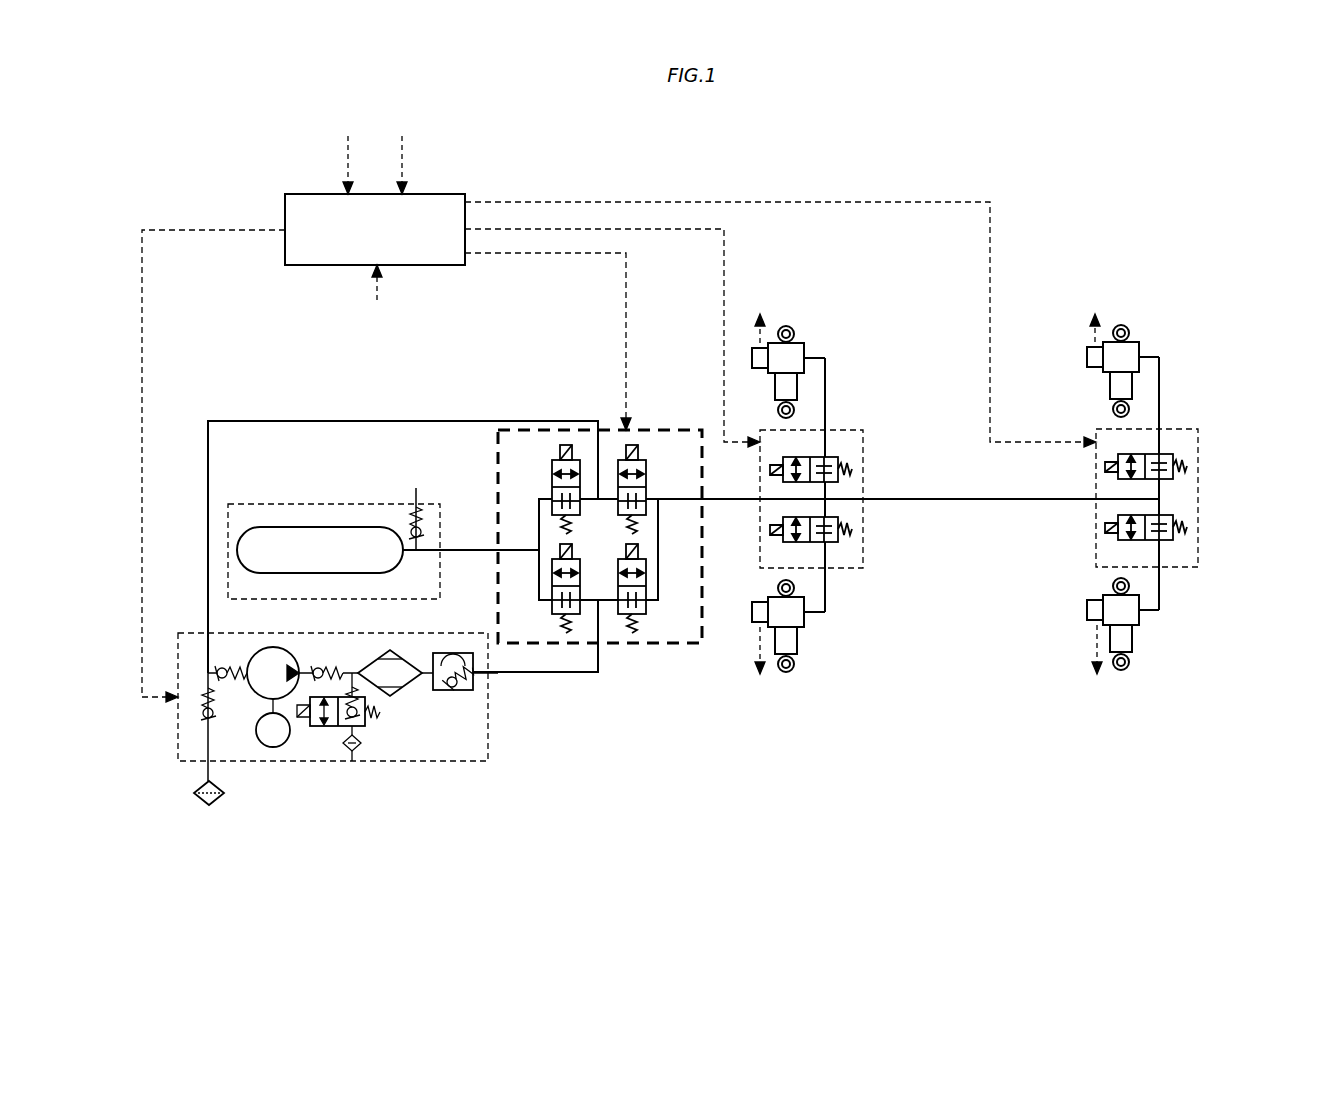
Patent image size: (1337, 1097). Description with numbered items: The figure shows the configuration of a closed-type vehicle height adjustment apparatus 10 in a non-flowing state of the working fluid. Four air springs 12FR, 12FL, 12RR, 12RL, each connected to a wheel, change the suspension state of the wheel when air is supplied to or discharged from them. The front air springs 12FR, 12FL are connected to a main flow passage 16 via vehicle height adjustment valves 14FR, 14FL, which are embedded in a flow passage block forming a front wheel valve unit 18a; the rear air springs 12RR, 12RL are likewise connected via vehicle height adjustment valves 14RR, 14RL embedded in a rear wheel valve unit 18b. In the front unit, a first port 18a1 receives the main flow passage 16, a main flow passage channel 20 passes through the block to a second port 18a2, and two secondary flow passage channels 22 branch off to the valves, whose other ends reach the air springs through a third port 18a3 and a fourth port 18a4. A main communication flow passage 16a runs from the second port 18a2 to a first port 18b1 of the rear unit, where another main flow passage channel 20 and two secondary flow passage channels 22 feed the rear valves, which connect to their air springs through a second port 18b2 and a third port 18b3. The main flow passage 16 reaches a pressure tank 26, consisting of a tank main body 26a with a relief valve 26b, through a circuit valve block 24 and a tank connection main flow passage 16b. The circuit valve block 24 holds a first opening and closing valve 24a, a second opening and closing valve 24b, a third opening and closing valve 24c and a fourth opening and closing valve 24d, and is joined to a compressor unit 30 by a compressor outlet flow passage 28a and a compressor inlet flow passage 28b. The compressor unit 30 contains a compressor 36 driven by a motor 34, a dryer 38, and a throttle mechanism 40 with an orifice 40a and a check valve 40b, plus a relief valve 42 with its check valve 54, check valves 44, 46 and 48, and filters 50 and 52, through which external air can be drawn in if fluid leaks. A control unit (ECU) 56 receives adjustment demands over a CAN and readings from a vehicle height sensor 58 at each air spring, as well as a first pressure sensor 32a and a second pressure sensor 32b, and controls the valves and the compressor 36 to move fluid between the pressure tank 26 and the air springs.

The vehicle height adjustment apparatus 10 is at (712, 821).
The air spring 12FR is at (795, 343).
The air spring 12FL is at (797, 640).
The air spring 12RR is at (1130, 342).
The air spring 12RL is at (1134, 638).
The vehicle height adjustment valve 14FR is at (835, 457).
The vehicle height adjustment valve 14FL is at (838, 540).
The vehicle height adjustment valve 14RR is at (1170, 454).
The vehicle height adjustment valve 14RL is at (1177, 540).
The main flow passage 16 is at (781, 519).
The main communication flow passage 16a is at (1010, 501).
The tank connection main flow passage 16b is at (455, 550).
The front wheel valve unit 18a is at (863, 568).
The first port 18a1 is at (760, 490).
The second port 18a2 is at (870, 499).
The third port 18a3 is at (828, 440).
The fourth port 18a4 is at (828, 570).
The rear wheel valve unit 18b is at (1198, 567).
The first port 18b1 is at (1094, 490).
The second port 18b2 is at (1162, 440).
The third port 18b3 is at (1162, 570).
The main flow passage channel 20 is at (770, 502).
The secondary flow passage channel 22 is at (852, 468).
The circuit valve block 24 is at (600, 557).
The first opening and closing valve 24a is at (563, 445).
The second opening and closing valve 24b is at (575, 630).
The third opening and closing valve 24c is at (640, 628).
The fourth opening and closing valve 24d is at (635, 445).
The pressure tank 26 is at (321, 523).
The tank main body 26a is at (310, 527).
The relief valve 26b is at (408, 530).
The compressor outlet flow passage 28a is at (538, 672).
The compressor inlet flow passage 28b is at (350, 421).
The compressor unit 30 is at (412, 769).
The first pressure sensor 32a is at (385, 298).
The second pressure sensor 32b is at (385, 298).
The motor 34 is at (273, 747).
The compressor 36 is at (258, 700).
The dryer 38 is at (412, 685).
The throttle mechanism 40 is at (465, 720).
The orifice 40a is at (453, 651).
The check valve 40b is at (463, 688).
The relief valve 42 is at (331, 726).
The check valve 44 is at (335, 665).
The check valve 46 is at (222, 665).
The check valve 48 is at (200, 713).
The filter 50 is at (357, 751).
The filter 52 is at (222, 805).
The check valve 54 is at (359, 722).
The control unit (ECU) 56 is at (434, 194).
The vehicle height sensor 58 is at (1087, 610).
The controller area network CAN is at (348, 153).